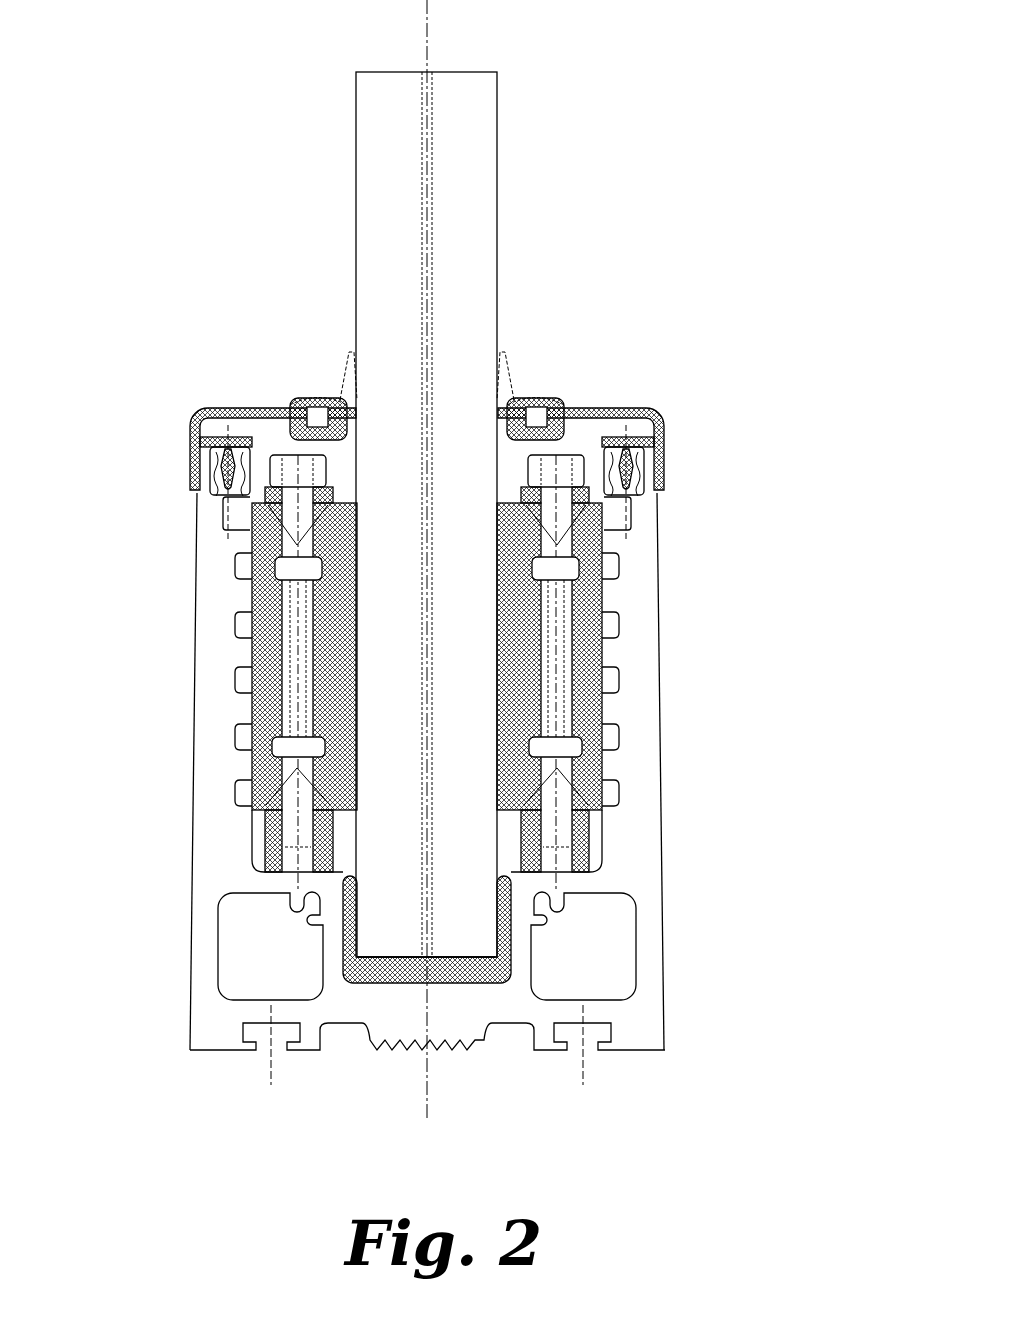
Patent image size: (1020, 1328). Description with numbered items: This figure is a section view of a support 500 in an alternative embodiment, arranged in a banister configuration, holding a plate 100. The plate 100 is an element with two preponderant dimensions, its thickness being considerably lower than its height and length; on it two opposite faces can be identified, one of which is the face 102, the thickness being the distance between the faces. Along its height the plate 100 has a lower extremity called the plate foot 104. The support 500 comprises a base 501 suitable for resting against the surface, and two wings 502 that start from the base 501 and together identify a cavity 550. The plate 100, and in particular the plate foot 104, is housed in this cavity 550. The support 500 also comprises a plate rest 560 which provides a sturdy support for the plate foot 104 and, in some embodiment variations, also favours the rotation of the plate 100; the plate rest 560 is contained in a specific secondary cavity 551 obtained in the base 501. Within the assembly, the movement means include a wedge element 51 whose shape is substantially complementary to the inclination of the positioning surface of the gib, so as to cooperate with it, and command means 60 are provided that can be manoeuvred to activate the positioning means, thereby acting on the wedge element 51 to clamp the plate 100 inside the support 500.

The plate 100 is at (439, 593).
The face of the plate 102 is at (454, 542).
The plate foot 104 is at (462, 900).
The support 500 is at (439, 702).
The base 501 is at (371, 732).
The wings 502 is at (217, 640).
The cavity 550 is at (344, 478).
The secondary cavity 551 is at (515, 589).
The plate rest 560 is at (397, 973).
The wedge element 51 is at (271, 505).
The command means 60 is at (288, 470).